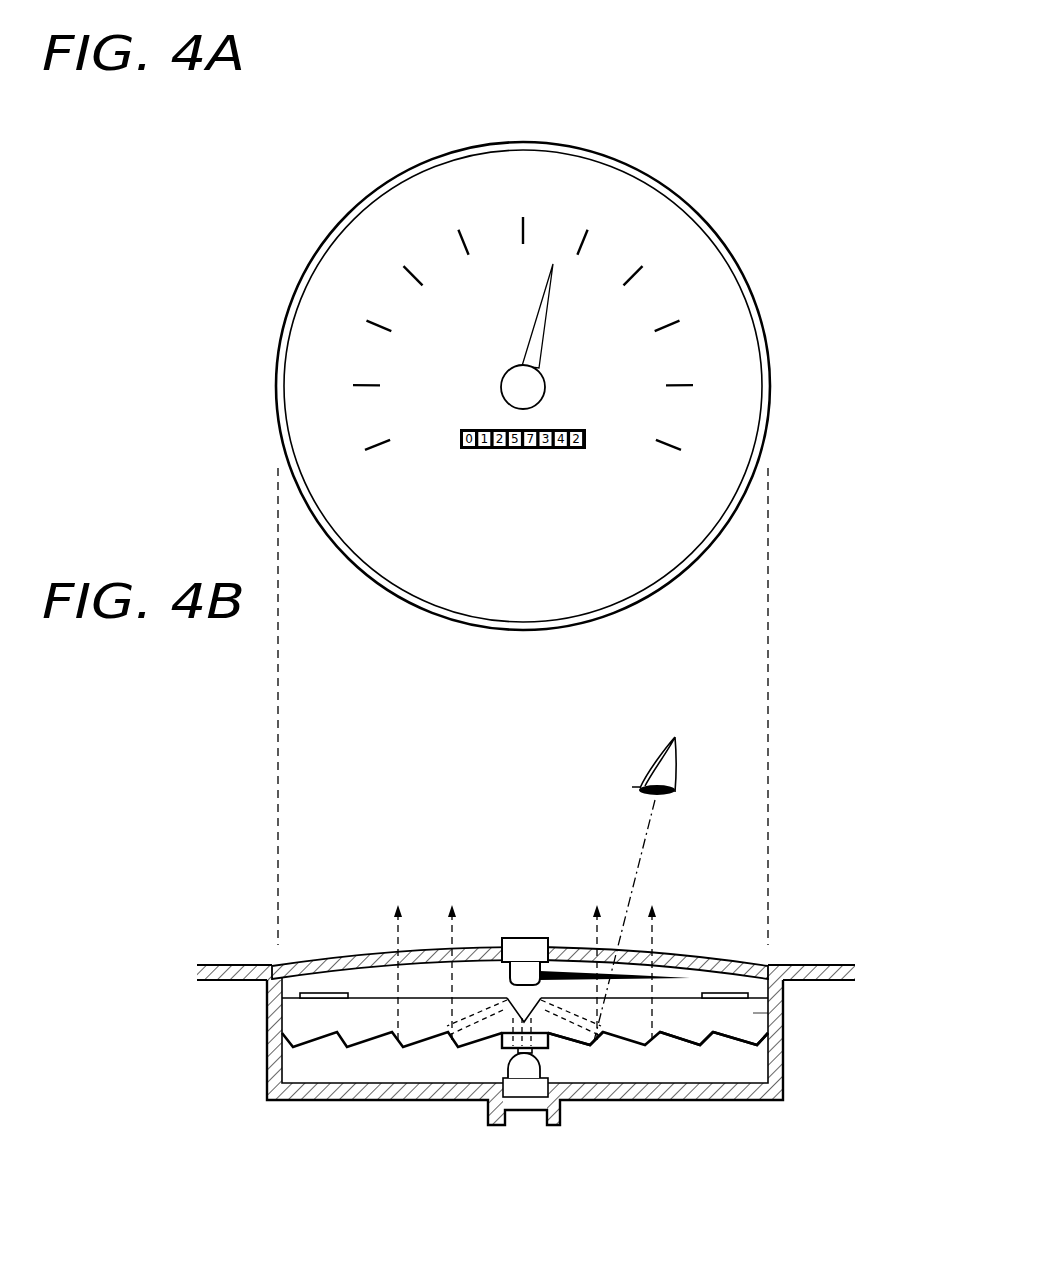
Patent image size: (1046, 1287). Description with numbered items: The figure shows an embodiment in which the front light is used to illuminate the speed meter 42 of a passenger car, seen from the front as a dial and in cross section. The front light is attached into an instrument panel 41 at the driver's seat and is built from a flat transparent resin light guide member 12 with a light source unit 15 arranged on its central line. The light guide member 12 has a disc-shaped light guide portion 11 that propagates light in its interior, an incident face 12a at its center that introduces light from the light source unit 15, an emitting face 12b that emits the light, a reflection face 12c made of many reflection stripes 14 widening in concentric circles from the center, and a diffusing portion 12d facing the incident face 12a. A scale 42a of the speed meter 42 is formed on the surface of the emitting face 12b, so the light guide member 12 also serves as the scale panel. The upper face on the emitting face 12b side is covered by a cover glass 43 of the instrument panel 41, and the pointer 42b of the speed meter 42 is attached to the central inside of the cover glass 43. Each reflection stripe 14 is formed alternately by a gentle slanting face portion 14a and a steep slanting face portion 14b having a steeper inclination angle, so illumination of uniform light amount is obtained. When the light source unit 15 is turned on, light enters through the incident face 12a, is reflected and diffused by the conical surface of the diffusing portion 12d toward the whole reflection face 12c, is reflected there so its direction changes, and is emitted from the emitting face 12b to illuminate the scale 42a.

In FIG. 4B, the light guide portion 11 is at (753, 1013).
In FIG. 4B, the light guide member 12 is at (276, 1016).
In FIG. 4B, the incident face 12a is at (504, 1048).
In FIG. 4B, the emitting face 12b is at (371, 998).
In FIG. 4B, the reflection face 12c is at (729, 1058).
In FIG. 4B, the diffusing portion 12d is at (521, 1008).
In FIG. 4B, the reflection stripe 14 is at (726, 1176).
In FIG. 4B, the gentle slanting face portion 14a is at (668, 1040).
In FIG. 4B, the steep slanting face portion 14b is at (596, 1041).
In FIG. 4B, the light source unit 15 is at (544, 1062).
In FIG. 4B, the instrument panel 41 is at (810, 965).
In FIG. 4A, the speed meter 42 is at (352, 201).
In FIG. 4B, the speed meter 42 is at (797, 1093).
In FIG. 4A, the scale 42a is at (360, 468).
In FIG. 4B, the scale 42a is at (322, 992).
In FIG. 4A, the pointer 42b is at (540, 343).
In FIG. 4B, the pointer 42b is at (558, 972).
In FIG. 4A, the cover glass 43 is at (706, 282).
In FIG. 4B, the cover glass 43 is at (677, 950).